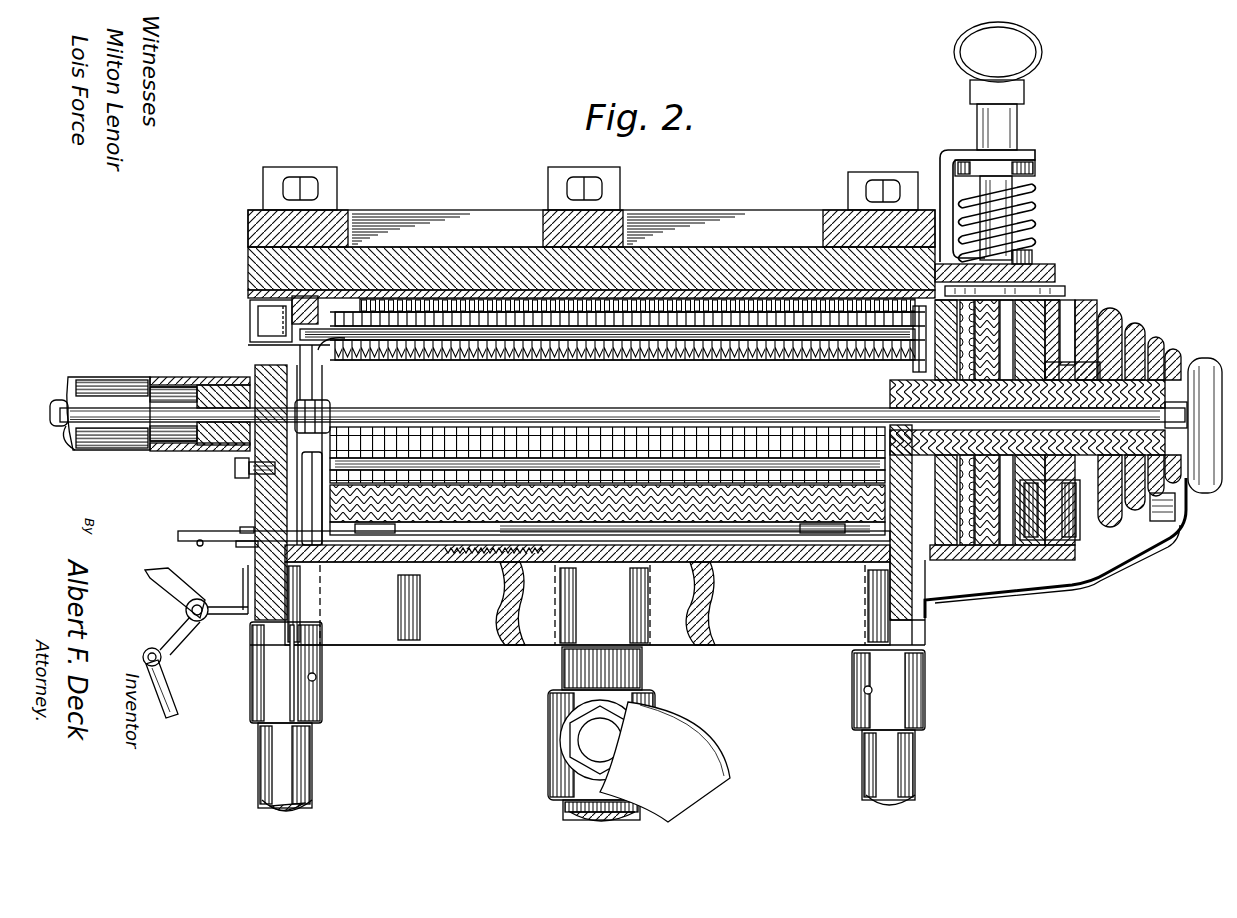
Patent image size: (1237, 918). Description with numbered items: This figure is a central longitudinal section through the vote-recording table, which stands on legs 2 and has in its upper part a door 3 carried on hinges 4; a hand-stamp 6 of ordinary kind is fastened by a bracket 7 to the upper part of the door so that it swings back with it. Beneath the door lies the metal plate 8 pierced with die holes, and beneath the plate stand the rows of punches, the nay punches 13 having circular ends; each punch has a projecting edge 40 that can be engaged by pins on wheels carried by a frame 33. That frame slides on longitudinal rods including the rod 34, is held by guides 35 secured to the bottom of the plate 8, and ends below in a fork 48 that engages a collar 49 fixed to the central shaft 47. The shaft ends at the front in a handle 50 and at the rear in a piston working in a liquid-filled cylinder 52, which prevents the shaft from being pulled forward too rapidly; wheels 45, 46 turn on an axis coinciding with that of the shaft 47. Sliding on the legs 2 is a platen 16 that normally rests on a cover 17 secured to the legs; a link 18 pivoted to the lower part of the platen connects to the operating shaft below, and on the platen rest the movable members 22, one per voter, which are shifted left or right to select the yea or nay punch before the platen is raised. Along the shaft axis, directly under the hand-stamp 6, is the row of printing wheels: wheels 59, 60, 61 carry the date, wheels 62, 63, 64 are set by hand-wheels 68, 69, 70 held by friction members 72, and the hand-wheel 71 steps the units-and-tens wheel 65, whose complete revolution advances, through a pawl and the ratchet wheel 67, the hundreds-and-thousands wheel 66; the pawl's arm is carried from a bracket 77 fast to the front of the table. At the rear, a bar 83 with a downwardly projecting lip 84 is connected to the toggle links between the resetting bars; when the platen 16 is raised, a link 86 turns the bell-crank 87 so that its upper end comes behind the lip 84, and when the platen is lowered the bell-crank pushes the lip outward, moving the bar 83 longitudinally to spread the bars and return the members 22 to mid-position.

The legs 2 is at (312, 766).
The door 3 is at (476, 222).
The hinges 4 is at (303, 177).
The hand-stamp 6 is at (998, 292).
The bracket 7 is at (940, 168).
The metal plate 8 is at (290, 300).
The nay punches 13 is at (607, 452).
The platen 16 is at (300, 632).
The cover 17 is at (323, 697).
The link 18 is at (700, 750).
The movable members 22 is at (792, 528).
The frame 33 is at (320, 349).
The rod 34 is at (913, 345).
The guides 35 is at (770, 298).
The projecting edge of punch 40 is at (604, 355).
The wheel 45 is at (905, 384).
The wheel 46 is at (905, 399).
The central shaft 47 is at (740, 408).
The fork 48 is at (318, 400).
The collar 49 is at (336, 412).
The handle 50 is at (1215, 486).
The cylinder 52 is at (140, 448).
The wheel 59 is at (965, 560).
The wheel 60 is at (985, 558).
The wheel 61 is at (1008, 556).
The wheel 62 is at (1000, 304).
The wheel 63 is at (1010, 322).
The wheel 64 is at (1030, 339).
The units and tens wheel 65 is at (1050, 366).
The hundreds and thousands wheel 66 is at (1060, 542).
The ratchet wheel 67 is at (1078, 540).
The hand-wheel 68 is at (1175, 352).
The hand-wheel 69 is at (1157, 340).
The hand-wheel 70 is at (1136, 325).
The hand-wheel 71 is at (1111, 312).
The friction members 72 is at (1176, 505).
The bracket 77 is at (1045, 550).
The bar 83 is at (240, 543).
The downwardly projecting lip 84 is at (178, 536).
The link 86 is at (172, 690).
The bell-crank 87 is at (175, 598).